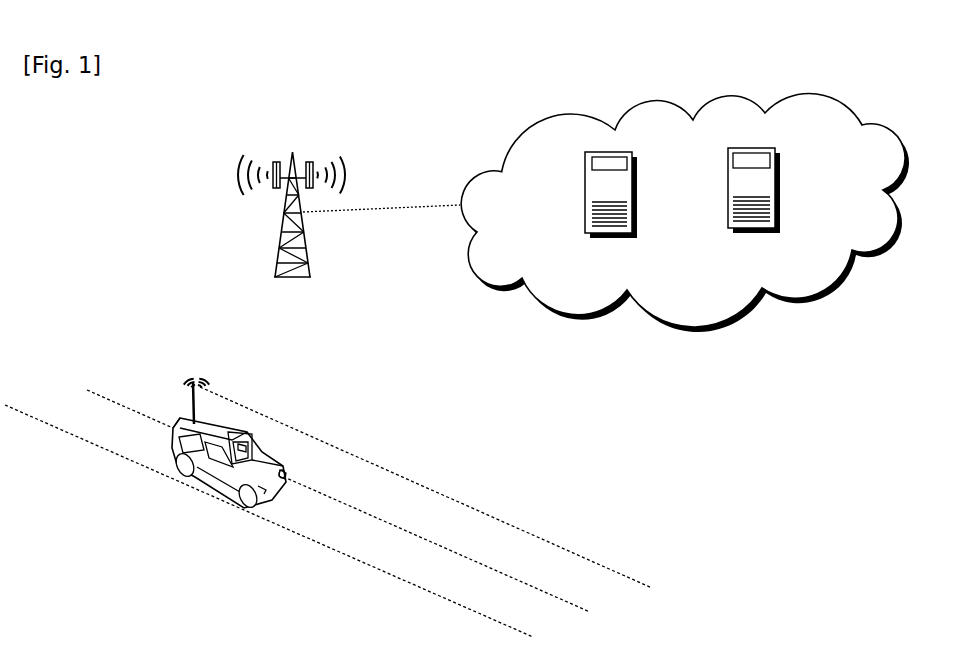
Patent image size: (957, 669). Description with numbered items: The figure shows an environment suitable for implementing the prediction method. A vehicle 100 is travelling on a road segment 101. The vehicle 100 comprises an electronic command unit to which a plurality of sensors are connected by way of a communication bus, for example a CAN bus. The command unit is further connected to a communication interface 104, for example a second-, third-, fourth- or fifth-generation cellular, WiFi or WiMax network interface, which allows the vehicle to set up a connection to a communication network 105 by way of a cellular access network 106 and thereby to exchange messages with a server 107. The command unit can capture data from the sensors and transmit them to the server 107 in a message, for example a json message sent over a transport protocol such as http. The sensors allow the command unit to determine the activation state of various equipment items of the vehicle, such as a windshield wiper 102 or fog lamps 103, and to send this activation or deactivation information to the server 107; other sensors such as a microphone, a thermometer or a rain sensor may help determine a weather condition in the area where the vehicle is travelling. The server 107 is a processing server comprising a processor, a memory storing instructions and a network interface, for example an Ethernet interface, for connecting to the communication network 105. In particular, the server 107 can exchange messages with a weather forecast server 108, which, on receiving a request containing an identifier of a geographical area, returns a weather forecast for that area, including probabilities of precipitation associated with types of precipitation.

The vehicle 100 is at (215, 493).
The road segment 101 is at (328, 512).
The windshield wiper 102 is at (274, 413).
The fog lamps 103 is at (313, 438).
The communication interface 104 is at (180, 369).
The communication network 105 is at (666, 218).
The cellular access network 106 is at (339, 235).
The server 107 is at (580, 210).
The weather forecast server 108 is at (722, 208).